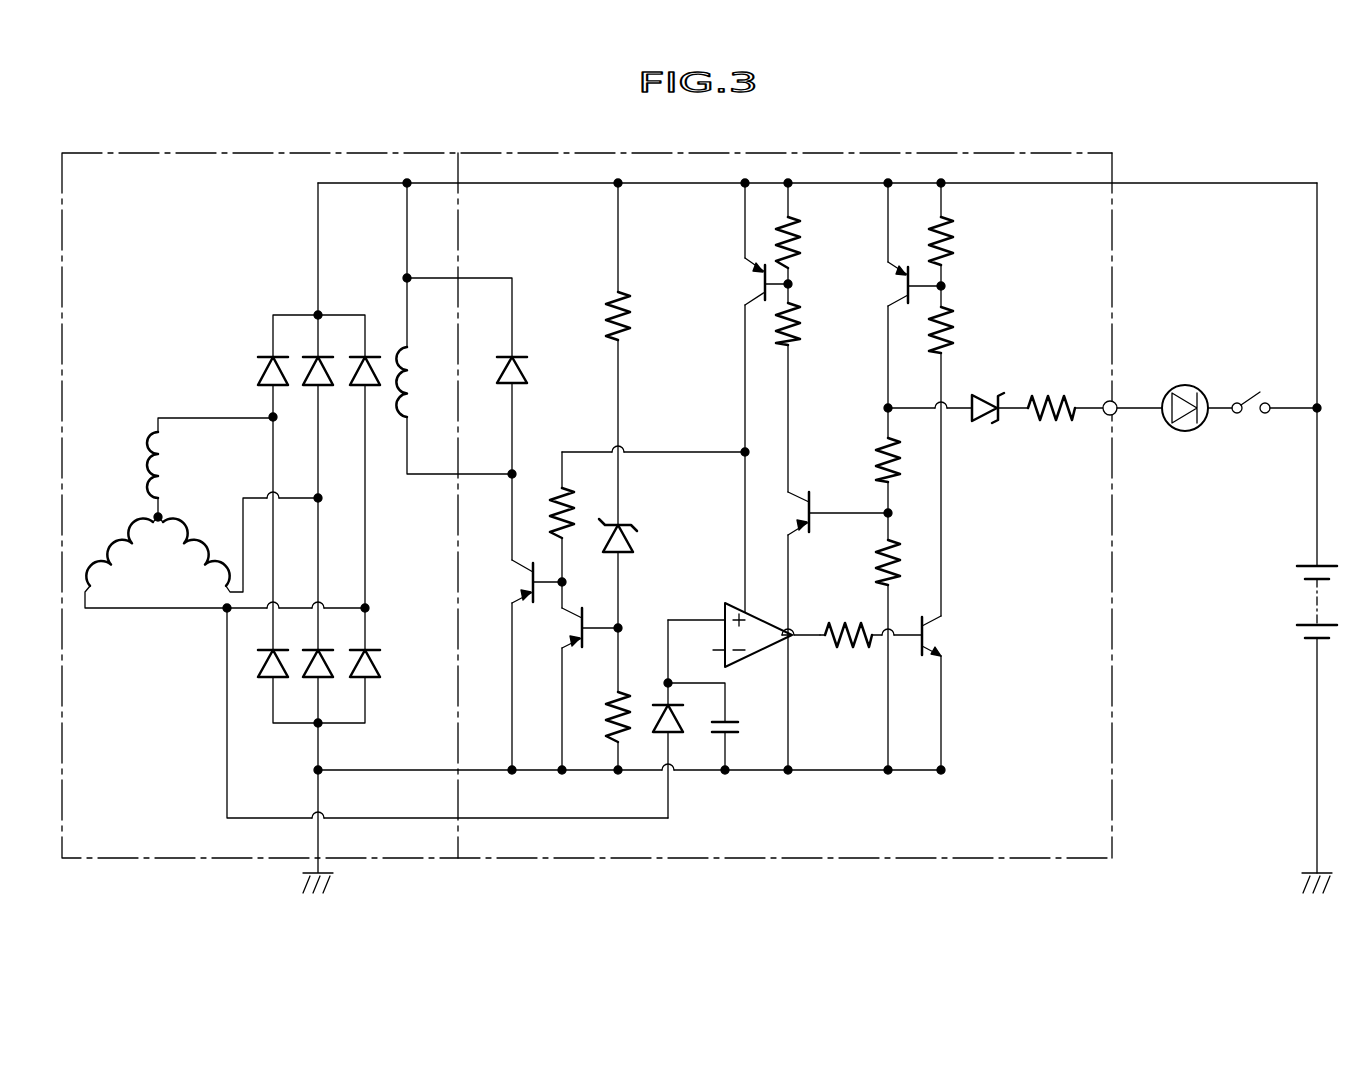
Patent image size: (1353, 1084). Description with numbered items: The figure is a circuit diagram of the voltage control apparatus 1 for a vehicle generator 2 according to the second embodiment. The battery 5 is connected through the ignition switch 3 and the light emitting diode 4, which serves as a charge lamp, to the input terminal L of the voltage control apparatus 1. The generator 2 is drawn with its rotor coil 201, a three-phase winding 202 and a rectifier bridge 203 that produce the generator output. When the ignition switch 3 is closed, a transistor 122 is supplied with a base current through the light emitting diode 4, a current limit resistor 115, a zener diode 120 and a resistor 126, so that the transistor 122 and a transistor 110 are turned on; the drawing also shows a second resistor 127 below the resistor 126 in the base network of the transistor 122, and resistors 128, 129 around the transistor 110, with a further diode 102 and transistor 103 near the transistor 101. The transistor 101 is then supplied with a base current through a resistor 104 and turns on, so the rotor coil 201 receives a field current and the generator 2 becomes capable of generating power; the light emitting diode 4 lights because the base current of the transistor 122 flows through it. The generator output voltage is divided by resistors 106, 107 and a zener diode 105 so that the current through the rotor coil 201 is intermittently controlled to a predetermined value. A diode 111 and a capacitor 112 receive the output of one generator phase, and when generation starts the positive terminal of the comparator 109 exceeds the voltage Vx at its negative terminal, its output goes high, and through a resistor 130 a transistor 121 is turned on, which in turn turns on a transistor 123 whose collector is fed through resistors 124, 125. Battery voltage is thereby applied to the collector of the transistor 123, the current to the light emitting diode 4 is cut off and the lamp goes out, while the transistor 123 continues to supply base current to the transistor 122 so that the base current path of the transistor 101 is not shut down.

The voltage control apparatus 1 is at (537, 862).
The vehicle generator 2 is at (142, 862).
The ignition switch 3 is at (1252, 392).
The light emitting diode 4 is at (1182, 385).
The battery 5 is at (1297, 580).
The input terminal L is at (1116, 418).
The rotor coil 201 is at (407, 345).
The armature coil 202 is at (155, 515).
The rectifier 203 is at (286, 395).
The transistor 101 is at (527, 608).
The diode 102 is at (528, 362).
The transistor 103 is at (572, 650).
The resistor 104 is at (568, 490).
The zener diode 105 is at (630, 523).
The resistor 106 is at (638, 312).
The resistor 107 is at (628, 700).
The comparator 109 is at (770, 655).
The transistor 110 is at (752, 292).
The diode 111 is at (678, 728).
The capacitor 112 is at (735, 728).
The current limit resistor 115 is at (1045, 395).
The zener diode 120 is at (985, 395).
The transistor 121 is at (940, 638).
The transistor 122 is at (800, 512).
The transistor 123 is at (900, 290).
The resistor 124 is at (960, 238).
The resistor 125 is at (960, 313).
The resistor 126 is at (875, 460).
The resistor 127 is at (875, 566).
The resistor 128 is at (800, 240).
The resistor 129 is at (802, 325).
The resistor 130 is at (850, 650).